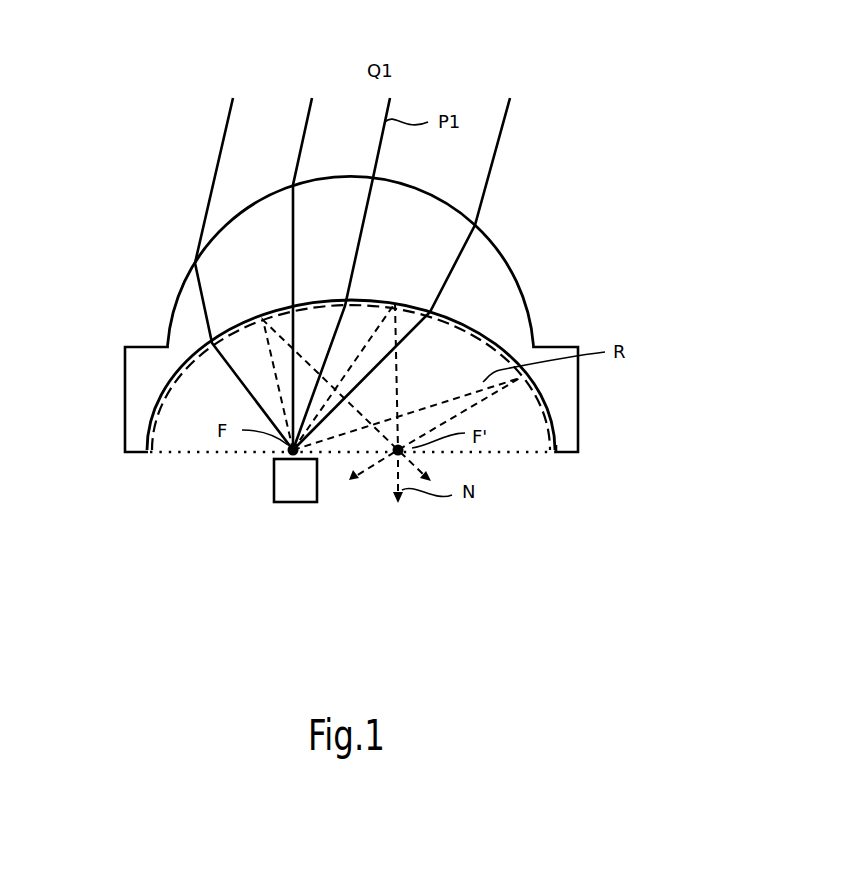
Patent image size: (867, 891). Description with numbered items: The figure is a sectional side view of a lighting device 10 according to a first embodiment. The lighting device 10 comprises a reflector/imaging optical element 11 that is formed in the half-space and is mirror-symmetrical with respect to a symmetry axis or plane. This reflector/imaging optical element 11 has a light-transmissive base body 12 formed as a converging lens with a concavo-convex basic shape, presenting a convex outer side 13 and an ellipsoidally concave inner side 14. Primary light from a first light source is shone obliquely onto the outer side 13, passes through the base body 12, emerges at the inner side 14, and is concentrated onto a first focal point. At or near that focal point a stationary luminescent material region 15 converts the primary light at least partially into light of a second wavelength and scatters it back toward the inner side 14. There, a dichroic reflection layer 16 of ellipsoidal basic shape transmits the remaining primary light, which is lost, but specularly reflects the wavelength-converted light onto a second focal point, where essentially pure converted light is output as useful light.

The lighting device 10 is at (643, 240).
The reflector/imaging optical element 11 is at (175, 305).
The light-transmissive base body 12 is at (148, 367).
The convex outer side 13 is at (501, 251).
The ellipsoidally concave inner side 14 is at (480, 340).
The luminescent material region 15 is at (293, 487).
The dichroic reflection layer 16 is at (157, 420).